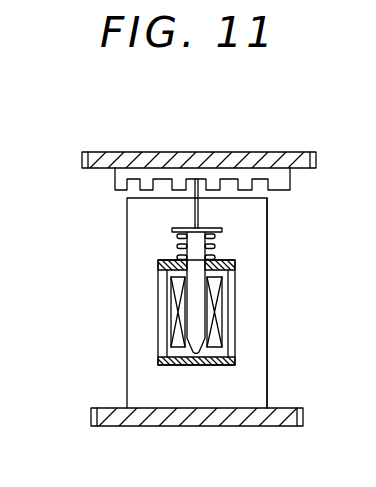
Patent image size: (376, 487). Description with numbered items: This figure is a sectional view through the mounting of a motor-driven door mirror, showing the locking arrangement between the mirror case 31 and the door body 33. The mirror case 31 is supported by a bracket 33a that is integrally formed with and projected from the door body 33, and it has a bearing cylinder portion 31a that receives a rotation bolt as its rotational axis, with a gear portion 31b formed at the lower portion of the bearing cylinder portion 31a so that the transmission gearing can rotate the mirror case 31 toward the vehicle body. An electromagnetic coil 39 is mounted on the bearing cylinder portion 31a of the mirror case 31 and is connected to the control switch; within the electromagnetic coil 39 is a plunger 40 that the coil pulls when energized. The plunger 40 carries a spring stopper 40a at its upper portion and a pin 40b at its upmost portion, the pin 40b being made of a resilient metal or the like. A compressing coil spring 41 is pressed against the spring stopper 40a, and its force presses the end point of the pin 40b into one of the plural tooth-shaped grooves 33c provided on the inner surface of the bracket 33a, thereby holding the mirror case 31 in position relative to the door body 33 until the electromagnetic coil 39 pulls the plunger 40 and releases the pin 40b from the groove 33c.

The mirror case 31 is at (267, 257).
The bearing cylinder portion 31a is at (268, 303).
The gear portion 31b is at (280, 407).
The door body 33 is at (122, 153).
The bracket 33a is at (230, 157).
The grooves 33c is at (262, 179).
The electromagnetic coil 39 is at (167, 316).
The plunger 40 is at (187, 350).
The spring stopper 40a is at (178, 229).
The pin 40b is at (193, 208).
The compressing coil spring 41 is at (179, 254).